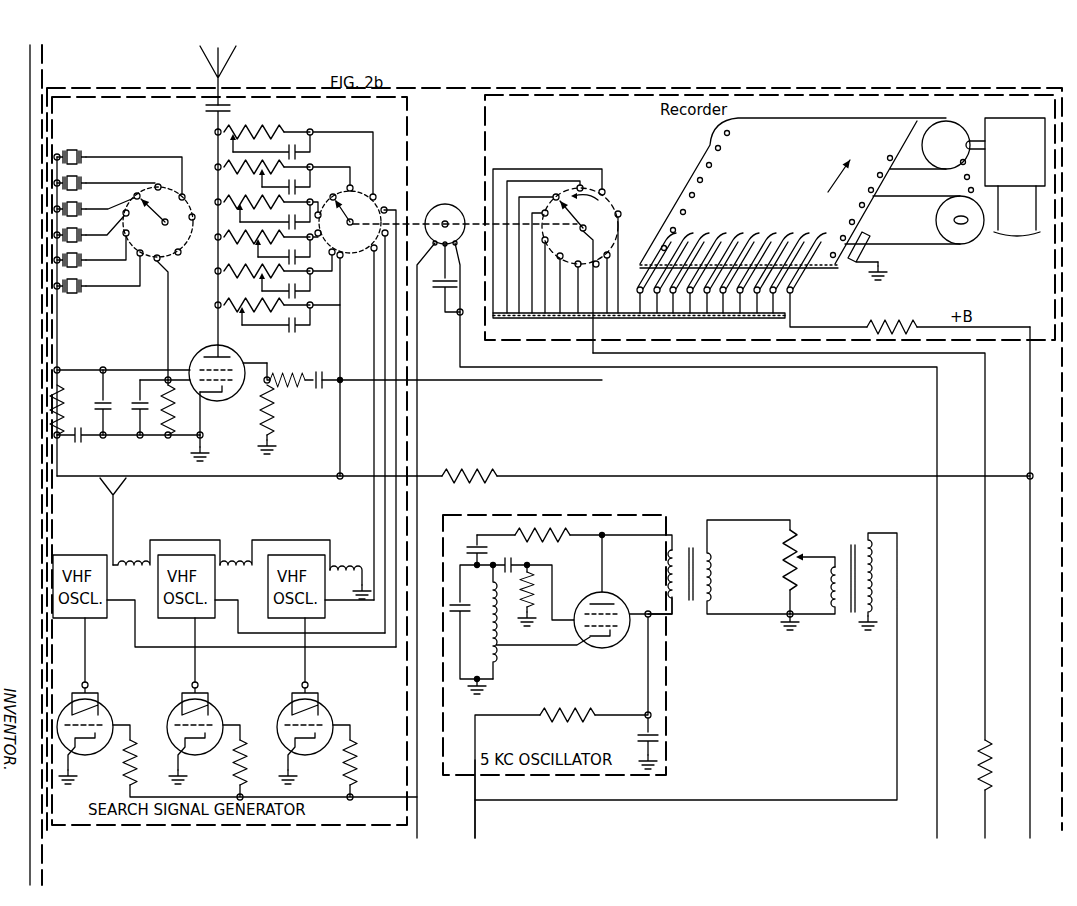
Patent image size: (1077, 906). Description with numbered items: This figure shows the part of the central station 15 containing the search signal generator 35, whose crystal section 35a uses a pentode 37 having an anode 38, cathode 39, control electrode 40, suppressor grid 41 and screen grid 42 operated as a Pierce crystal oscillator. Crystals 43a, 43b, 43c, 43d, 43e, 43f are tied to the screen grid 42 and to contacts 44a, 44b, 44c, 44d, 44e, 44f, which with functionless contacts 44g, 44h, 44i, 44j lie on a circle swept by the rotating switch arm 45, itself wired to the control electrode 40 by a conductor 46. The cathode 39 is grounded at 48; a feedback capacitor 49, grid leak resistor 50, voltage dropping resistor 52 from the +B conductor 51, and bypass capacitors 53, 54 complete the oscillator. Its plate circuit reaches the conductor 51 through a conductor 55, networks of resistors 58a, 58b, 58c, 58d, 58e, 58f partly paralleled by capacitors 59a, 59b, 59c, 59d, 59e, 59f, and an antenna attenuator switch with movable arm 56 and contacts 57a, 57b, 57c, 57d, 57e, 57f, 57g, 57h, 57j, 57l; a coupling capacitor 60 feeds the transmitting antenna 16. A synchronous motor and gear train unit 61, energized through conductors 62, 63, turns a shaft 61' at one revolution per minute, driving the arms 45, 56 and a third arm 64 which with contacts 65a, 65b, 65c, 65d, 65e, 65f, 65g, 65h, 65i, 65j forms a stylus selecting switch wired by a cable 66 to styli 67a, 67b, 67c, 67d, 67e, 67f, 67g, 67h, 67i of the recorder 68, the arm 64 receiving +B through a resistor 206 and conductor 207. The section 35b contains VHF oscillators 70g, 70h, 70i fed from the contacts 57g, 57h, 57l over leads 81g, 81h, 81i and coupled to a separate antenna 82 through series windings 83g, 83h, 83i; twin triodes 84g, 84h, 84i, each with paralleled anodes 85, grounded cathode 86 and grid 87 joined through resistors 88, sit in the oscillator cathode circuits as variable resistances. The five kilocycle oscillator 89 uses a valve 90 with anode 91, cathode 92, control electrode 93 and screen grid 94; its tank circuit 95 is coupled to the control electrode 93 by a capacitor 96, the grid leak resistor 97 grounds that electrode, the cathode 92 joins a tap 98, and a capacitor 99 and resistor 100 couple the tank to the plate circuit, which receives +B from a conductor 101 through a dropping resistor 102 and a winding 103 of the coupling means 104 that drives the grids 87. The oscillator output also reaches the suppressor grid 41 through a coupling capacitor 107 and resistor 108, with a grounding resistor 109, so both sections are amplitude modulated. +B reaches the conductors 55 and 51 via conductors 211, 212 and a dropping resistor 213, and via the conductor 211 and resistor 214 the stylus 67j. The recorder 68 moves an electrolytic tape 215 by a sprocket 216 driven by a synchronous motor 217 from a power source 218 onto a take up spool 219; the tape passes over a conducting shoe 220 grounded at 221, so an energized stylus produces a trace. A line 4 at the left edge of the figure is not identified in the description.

The boundary line 4 is at (42, 314).
The central station 15 is at (470, 88).
The transmitting antenna 16 is at (220, 84).
The search signal generator 35 is at (133, 103).
The section of search signal generator 35a is at (152, 139).
The section of search signal generator 35b is at (245, 523).
The electron discharge valve 37 is at (211, 354).
The anode 38 is at (232, 357).
The cathode 39 is at (214, 400).
The control electrode 40 is at (233, 392).
The suppressor grid 41 is at (189, 368).
The screen grid 42 is at (196, 379).
The crystal 43a is at (69, 145).
The crystal 43b is at (69, 171).
The crystal 43c is at (69, 197).
The crystal 43d is at (69, 223).
The crystal 43e is at (69, 248).
The crystal 43f is at (69, 274).
The contact 44a is at (195, 184).
The contact 44b is at (154, 179).
The contact 44c is at (134, 192).
The contact 44d is at (141, 221).
The contact 44e is at (148, 240).
The contact 44f is at (151, 272).
The contact 44g is at (179, 317).
The contact 44h is at (194, 258).
The contact 44i is at (176, 229).
The contact 44j is at (201, 207).
The rotating switch arm 45 is at (156, 210).
The conductor 46 is at (168, 308).
The ground 48 is at (201, 447).
The feed back capacitor 49 is at (138, 408).
The grid leak resistor 50 is at (169, 410).
The conductor 51 is at (262, 476).
The voltage dropping resistor 52 is at (58, 412).
The radio frequency bypass capacitor 53 is at (78, 442).
The radio frequency bypass capacitor 54 is at (111, 402).
The conductor 55 is at (341, 376).
The movable switch arm 56 is at (355, 212).
The contact 57a is at (359, 166).
The contact 57b is at (348, 177).
The contact 57c is at (336, 194).
The contact 57d is at (332, 213).
The contact 57e is at (331, 236).
The contact 57f is at (334, 258).
The contact 57g is at (343, 270).
The contact 57h is at (370, 236).
The contact 57j is at (397, 211).
The contact 57l is at (396, 239).
The resistor 58a is at (268, 132).
The resistor 58b is at (268, 177).
The resistor 58c is at (267, 212).
The resistor 58d is at (267, 247).
The resistor 58e is at (267, 281).
The resistor 58f is at (267, 315).
The capacitor 59a is at (290, 145).
The capacitor 59b is at (297, 186).
The capacitor 59c is at (275, 216).
The capacitor 59d is at (284, 251).
The capacitor 59e is at (286, 285).
The capacitor 59f is at (276, 319).
The coupling capacitor 60 is at (206, 108).
The synchronous motor and gear train unit 61 is at (449, 249).
The interconnecting shaft 61' is at (423, 198).
The conductor 62 is at (417, 452).
The conductor 63 is at (937, 395).
The third switch arm 64 is at (582, 273).
The contact 65a is at (605, 191).
The contact 65b is at (595, 183).
The contact 65c is at (557, 194).
The contact 65d is at (545, 210).
The contact 65e is at (559, 266).
The contact 65f is at (568, 275).
The contact 65g is at (580, 262).
The contact 65h is at (598, 264).
The contact 65i is at (609, 253).
The contact 65j is at (620, 213).
The cable 66 is at (660, 318).
The stylus 67a is at (669, 238).
The stylus 67b is at (686, 240).
The stylus 67c is at (702, 238).
The stylus 67d is at (719, 240).
The stylus 67e is at (736, 238).
The stylus 67f is at (752, 240).
The stylus 67g is at (769, 238).
The stylus 67h is at (786, 240).
The stylus 67i is at (802, 238).
The stylus 67j is at (819, 240).
The recorder 68 is at (625, 96).
The VHF oscillator 70g is at (326, 605).
The VHF oscillator 70h is at (207, 618).
The VHF oscillator 70i is at (97, 618).
The lead 81g is at (374, 406).
The lead 81h is at (385, 430).
The lead 81i is at (396, 450).
The antenna 82 is at (114, 502).
The winding 83g is at (356, 566).
The winding 83h is at (242, 562).
The winding 83i is at (135, 562).
The electron discharge valve 84g is at (328, 712).
The electron discharge valve 84h is at (218, 712).
The electron discharge valve 84i is at (108, 712).
The anodes 85 is at (97, 703).
The grounded cathode 86 is at (71, 769).
The control electrode 87 is at (244, 728).
The resistors 88 is at (131, 752).
The 5 kc. oscillator 89 is at (562, 515).
The electron discharge valve 90 is at (606, 603).
The anode 91 is at (586, 612).
The cathode 92 is at (616, 642).
The control electrode 93 is at (582, 640).
The screen grid 94 is at (627, 610).
The tank circuit 95 is at (468, 597).
The capacitor 96 is at (513, 565).
The grid leak resistor 97 is at (534, 595).
The tap 98 is at (493, 656).
The capacitor 99 is at (472, 546).
The resistor 100 is at (535, 530).
The conductor 101 is at (481, 818).
The voltage dropping resistor 102 is at (568, 712).
The winding 103 is at (690, 548).
The coupling means 104 is at (764, 576).
The coupling capacitor 107 is at (328, 366).
The resistor 108 is at (288, 376).
The resistor 109 is at (268, 408).
The voltage dropping resistor 206 is at (982, 752).
The conductor 207 is at (985, 395).
The conductor 211 is at (1030, 825).
The conductor 212 is at (678, 476).
The voltage dropping resistor 213 is at (458, 476).
The voltage dropping resistor 214 is at (890, 320).
The movable recording element 215 is at (807, 193).
The sprocket 216 is at (942, 120).
The synchronous motor 217 is at (1006, 118).
The source of power 218 is at (1017, 223).
The take up spool 219 is at (957, 244).
The conducting shoe 220 is at (855, 235).
The ground 221 is at (880, 266).